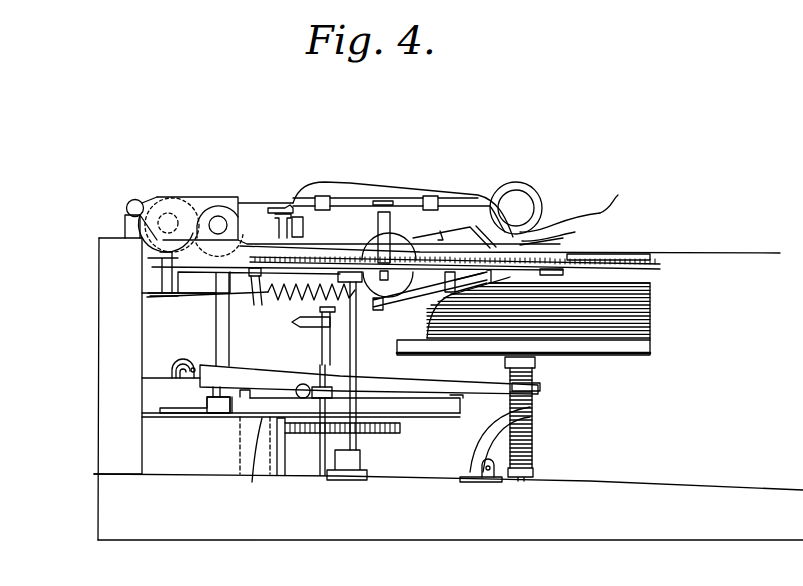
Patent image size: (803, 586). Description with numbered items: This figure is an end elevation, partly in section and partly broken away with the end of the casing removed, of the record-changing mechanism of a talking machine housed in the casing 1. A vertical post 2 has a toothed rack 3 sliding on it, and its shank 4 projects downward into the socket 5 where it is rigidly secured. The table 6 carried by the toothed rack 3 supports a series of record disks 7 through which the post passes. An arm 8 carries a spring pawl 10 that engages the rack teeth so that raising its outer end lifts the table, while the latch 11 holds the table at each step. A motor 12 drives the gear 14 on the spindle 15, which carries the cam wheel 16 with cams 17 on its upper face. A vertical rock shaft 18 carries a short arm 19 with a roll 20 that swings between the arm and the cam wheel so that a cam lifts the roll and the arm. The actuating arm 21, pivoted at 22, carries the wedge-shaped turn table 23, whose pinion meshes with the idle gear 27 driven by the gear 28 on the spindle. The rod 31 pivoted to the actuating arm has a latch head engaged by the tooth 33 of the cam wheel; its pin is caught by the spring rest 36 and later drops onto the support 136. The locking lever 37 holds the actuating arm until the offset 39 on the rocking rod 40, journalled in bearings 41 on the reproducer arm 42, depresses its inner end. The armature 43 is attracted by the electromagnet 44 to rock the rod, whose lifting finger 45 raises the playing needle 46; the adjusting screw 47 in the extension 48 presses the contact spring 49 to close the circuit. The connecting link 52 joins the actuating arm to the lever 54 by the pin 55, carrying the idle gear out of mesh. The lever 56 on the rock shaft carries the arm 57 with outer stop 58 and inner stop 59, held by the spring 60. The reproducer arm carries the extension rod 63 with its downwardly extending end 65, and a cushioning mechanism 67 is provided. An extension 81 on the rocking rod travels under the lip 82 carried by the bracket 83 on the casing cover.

The casing 1 is at (100, 410).
The vertical post 2 is at (532, 480).
The toothed rack 3 is at (535, 437).
The shank 4 is at (187, 366).
The socket 5 is at (532, 415).
The table 6 is at (630, 357).
The record disks 7 is at (650, 254).
The arm 8 is at (418, 384).
The spring pawl 10 is at (540, 387).
The latch 11 is at (480, 443).
The motor 12 is at (185, 483).
The gear 14 is at (382, 434).
The spindle 15 is at (383, 340).
The cam wheel 16 is at (440, 420).
The cams 17 is at (458, 399).
The vertical rock shaft 18 is at (322, 352).
The short arm 19 is at (326, 386).
The roll 20 is at (301, 387).
The actuating arm 21 is at (205, 275).
The pivot 22 is at (165, 268).
The turn table 23 is at (582, 256).
The idle gear 27 is at (654, 270).
The gear 28 is at (323, 260).
The rod 31 is at (238, 342).
The tooth 33 is at (238, 414).
The spring rest 36 is at (181, 408).
The locking lever 37 is at (396, 216).
The offset 39 is at (385, 201).
The rocking rod 40 is at (255, 203).
The bearings 41 is at (323, 199).
The reproducer arm 42 is at (484, 190).
The armature 43 is at (190, 203).
The electromagnet 44 is at (228, 213).
The lifting finger 45 is at (574, 217).
The playing needle 46 is at (619, 196).
The adjusting screw 47 is at (126, 208).
The extension 48 is at (150, 206).
The contact spring 49 is at (124, 228).
The connecting link 52 is at (266, 293).
The lever 54 is at (497, 273).
The pin 55 is at (253, 306).
The lever 56 is at (346, 316).
The arm 57 is at (397, 296).
The outer stop 58 is at (488, 281).
The inner stop 59 is at (444, 282).
The spring 60 is at (295, 320).
The extension rod 63 is at (476, 235).
The downwardly extending end 65 is at (538, 246).
The cushioning mechanism 67 is at (434, 238).
The extension 81 is at (282, 206).
The lip 82 is at (303, 214).
The bracket 83 is at (278, 228).
The support 136 is at (270, 474).